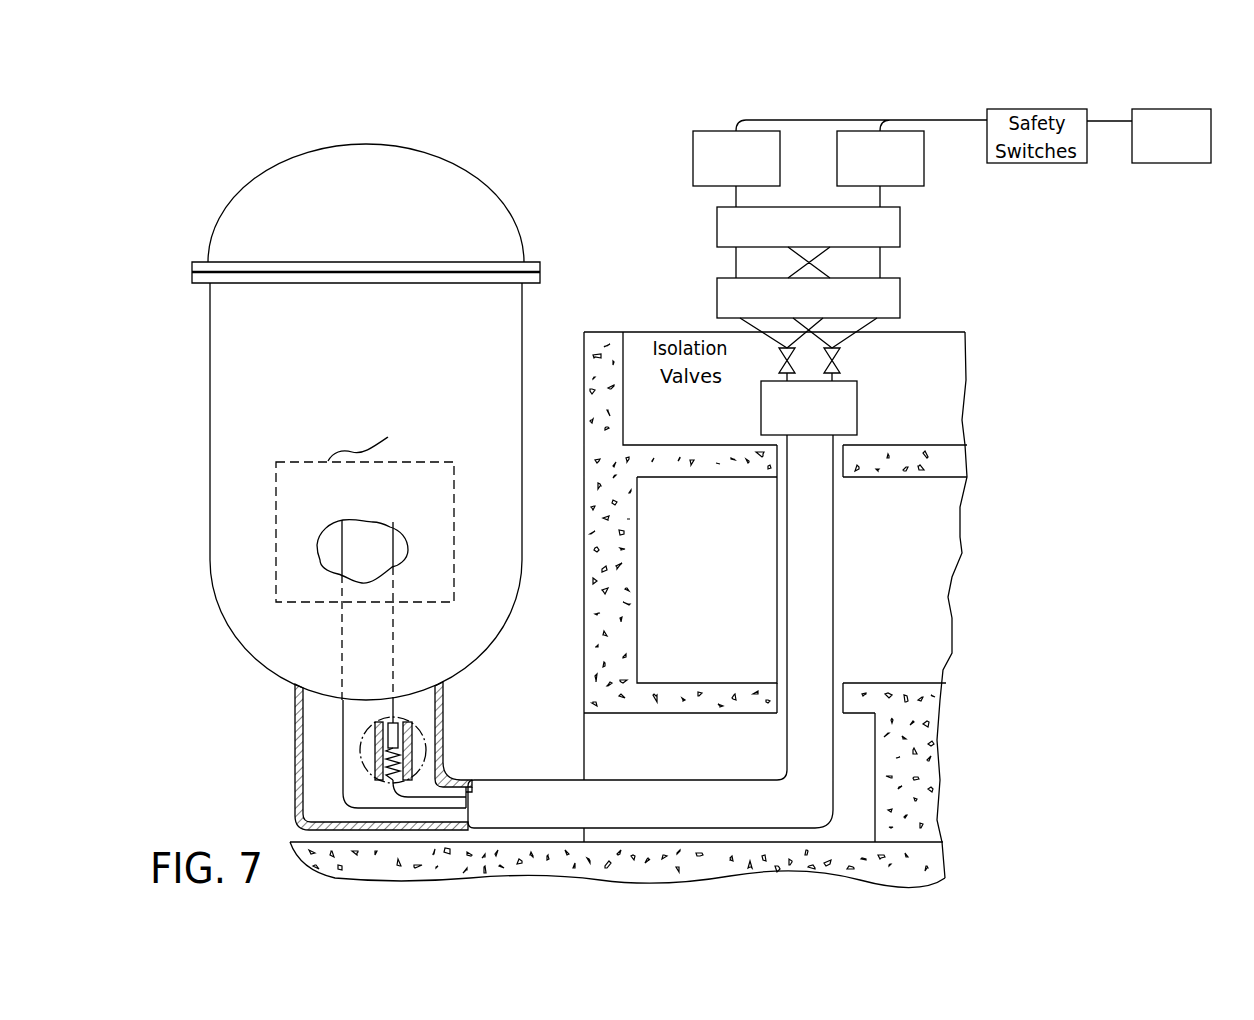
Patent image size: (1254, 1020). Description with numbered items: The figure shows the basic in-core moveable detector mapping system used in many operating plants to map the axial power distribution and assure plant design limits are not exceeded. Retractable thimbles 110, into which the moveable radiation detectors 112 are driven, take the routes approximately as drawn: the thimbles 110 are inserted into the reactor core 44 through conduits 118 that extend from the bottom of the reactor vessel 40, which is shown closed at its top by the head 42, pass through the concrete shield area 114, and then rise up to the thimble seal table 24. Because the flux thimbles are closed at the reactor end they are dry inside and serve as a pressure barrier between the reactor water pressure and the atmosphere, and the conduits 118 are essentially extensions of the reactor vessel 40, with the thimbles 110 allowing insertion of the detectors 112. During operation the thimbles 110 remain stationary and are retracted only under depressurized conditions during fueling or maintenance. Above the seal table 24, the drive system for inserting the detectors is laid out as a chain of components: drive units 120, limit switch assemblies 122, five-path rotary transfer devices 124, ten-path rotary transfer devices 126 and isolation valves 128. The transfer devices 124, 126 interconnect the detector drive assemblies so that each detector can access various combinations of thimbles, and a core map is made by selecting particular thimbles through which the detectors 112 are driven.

The thimble seal table 24 is at (857, 413).
The reactor vessel 40 is at (317, 648).
The closure head 42 is at (481, 188).
The reactor core 44 is at (454, 527).
The retractable thimble 110 is at (343, 735).
The moveable radiation detector 112 is at (343, 792).
The concrete shield area 114 is at (733, 639).
The conduit 118 is at (833, 573).
The drive unit 120 is at (1173, 163).
The limit switch assembly 122 is at (692, 160).
The five-path rotary transfer device 124 is at (900, 225).
The ten-path rotary transfer device 126 is at (900, 300).
The isolation valve 128 is at (783, 357).